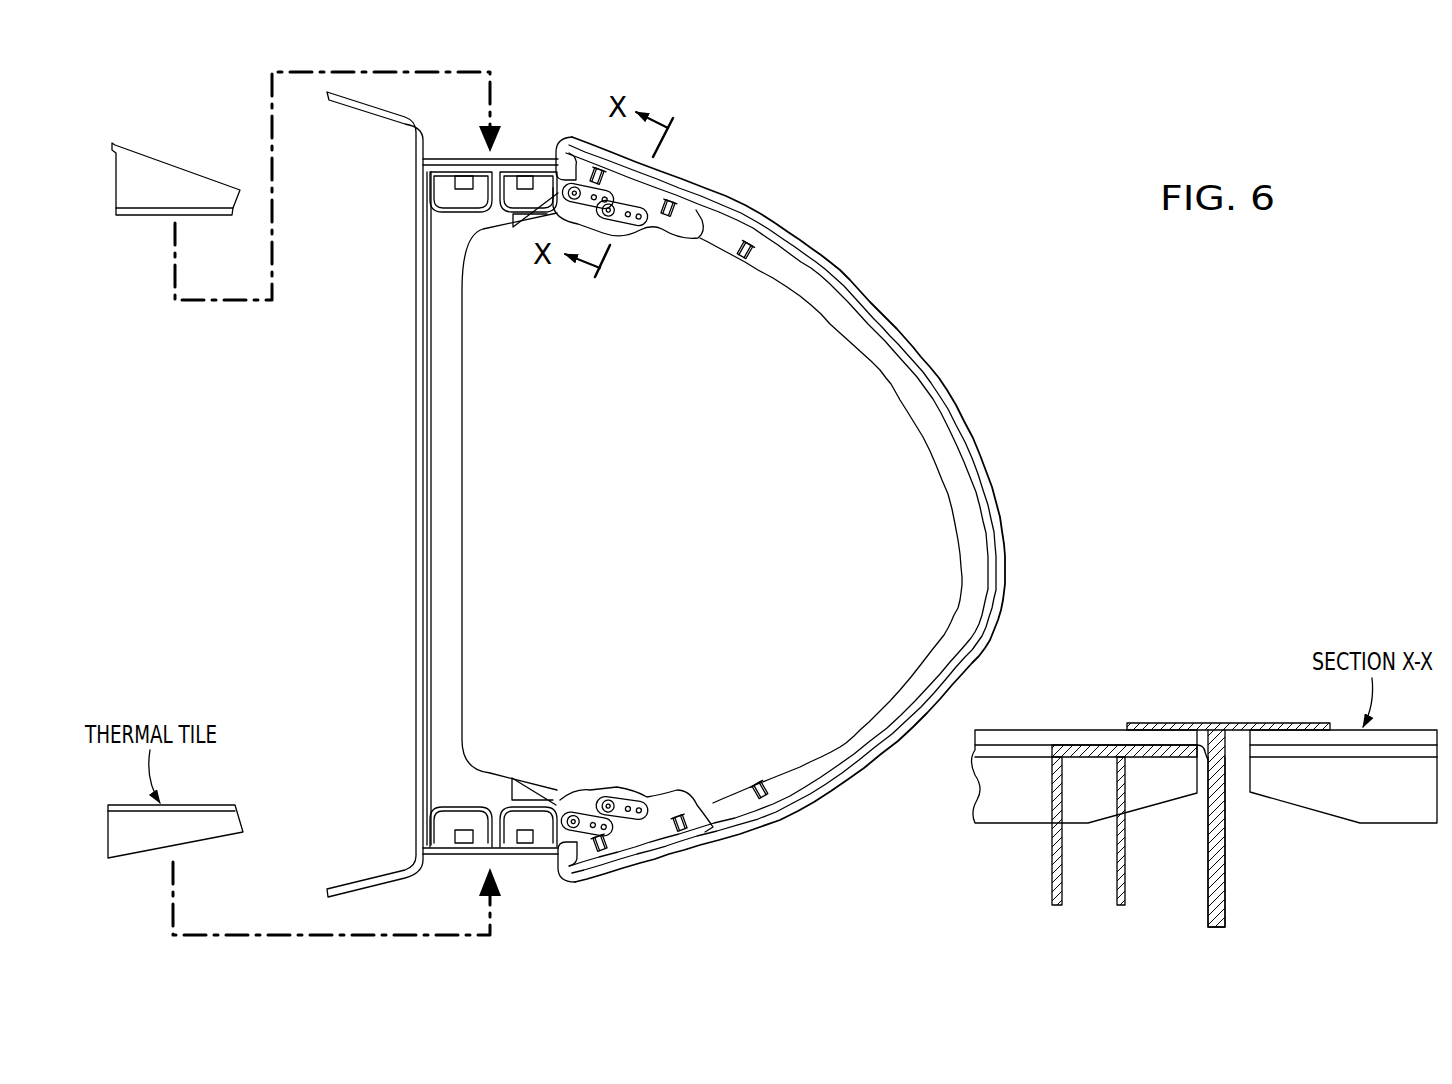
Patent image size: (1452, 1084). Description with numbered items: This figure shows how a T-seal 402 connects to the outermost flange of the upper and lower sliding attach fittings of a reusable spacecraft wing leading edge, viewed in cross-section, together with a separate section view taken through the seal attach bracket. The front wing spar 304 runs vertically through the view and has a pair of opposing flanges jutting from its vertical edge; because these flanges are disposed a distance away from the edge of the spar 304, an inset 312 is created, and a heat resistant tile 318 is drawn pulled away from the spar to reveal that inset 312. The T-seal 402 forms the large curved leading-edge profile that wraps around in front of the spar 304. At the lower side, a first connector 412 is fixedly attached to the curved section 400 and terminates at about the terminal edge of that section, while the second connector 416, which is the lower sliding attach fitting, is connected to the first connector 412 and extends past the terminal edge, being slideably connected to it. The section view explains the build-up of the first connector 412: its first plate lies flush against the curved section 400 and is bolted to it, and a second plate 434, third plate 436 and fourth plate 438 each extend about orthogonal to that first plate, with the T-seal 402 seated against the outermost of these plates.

The spar 304 is at (412, 455).
The inset 312 is at (522, 142).
The tile 318 is at (150, 152).
The curved section 400 is at (1073, 729).
The T-seal 402 is at (1005, 484).
The first connector 412 is at (472, 805).
The second connector 416 is at (650, 794).
The second plate 434 is at (1050, 888).
The third plate 436 is at (1112, 890).
The fourth plate 438 is at (1207, 884).